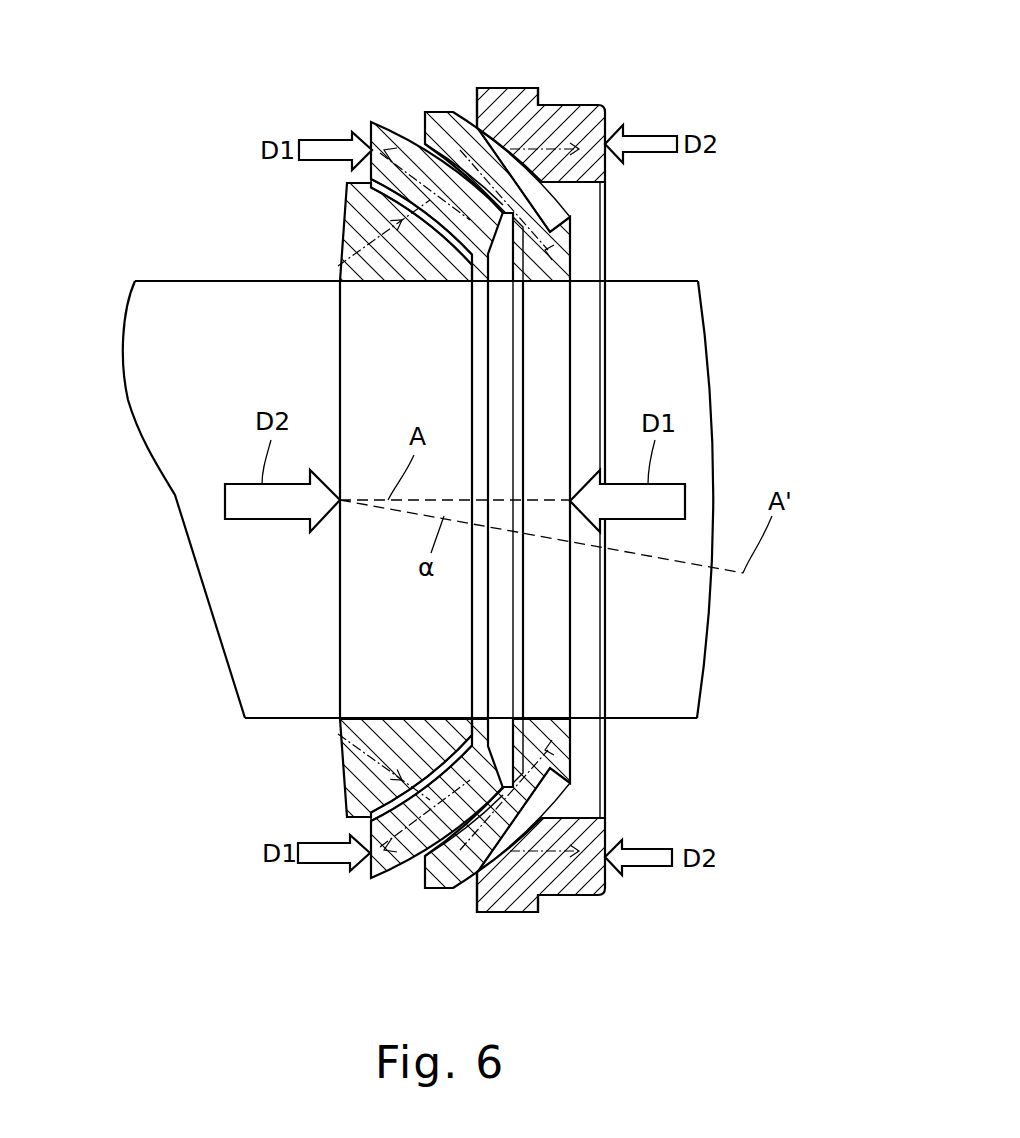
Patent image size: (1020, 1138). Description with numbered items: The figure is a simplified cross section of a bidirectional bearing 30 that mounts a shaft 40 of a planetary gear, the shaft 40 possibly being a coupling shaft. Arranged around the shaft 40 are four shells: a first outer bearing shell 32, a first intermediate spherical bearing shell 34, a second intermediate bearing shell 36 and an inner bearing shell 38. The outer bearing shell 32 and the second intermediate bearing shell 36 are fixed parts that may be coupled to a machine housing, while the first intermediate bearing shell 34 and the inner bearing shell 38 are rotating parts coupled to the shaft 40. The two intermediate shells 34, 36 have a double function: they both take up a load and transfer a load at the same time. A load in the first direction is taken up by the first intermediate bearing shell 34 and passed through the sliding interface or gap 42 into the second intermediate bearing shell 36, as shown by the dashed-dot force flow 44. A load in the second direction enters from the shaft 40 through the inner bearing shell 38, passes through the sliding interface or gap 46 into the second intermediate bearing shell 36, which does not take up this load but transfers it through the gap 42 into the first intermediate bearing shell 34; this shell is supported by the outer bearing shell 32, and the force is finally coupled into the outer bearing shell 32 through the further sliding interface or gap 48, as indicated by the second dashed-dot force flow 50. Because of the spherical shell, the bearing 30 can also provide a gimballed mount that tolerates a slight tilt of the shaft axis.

The bidirectional bearing 30 is at (627, 72).
The first outer bearing shell 32 is at (604, 148).
The first intermediate spherical bearing shell 34 is at (566, 236).
The second intermediate bearing shell 36 is at (385, 838).
The inner bearing shell 38 is at (366, 778).
The shaft 40 is at (175, 281).
The sliding interface or gap 42 is at (430, 140).
The force flow 44 is at (395, 148).
The sliding interface or gap 46 is at (398, 210).
The further sliding interface or gap 48 is at (506, 102).
The second force flow 50 is at (553, 148).